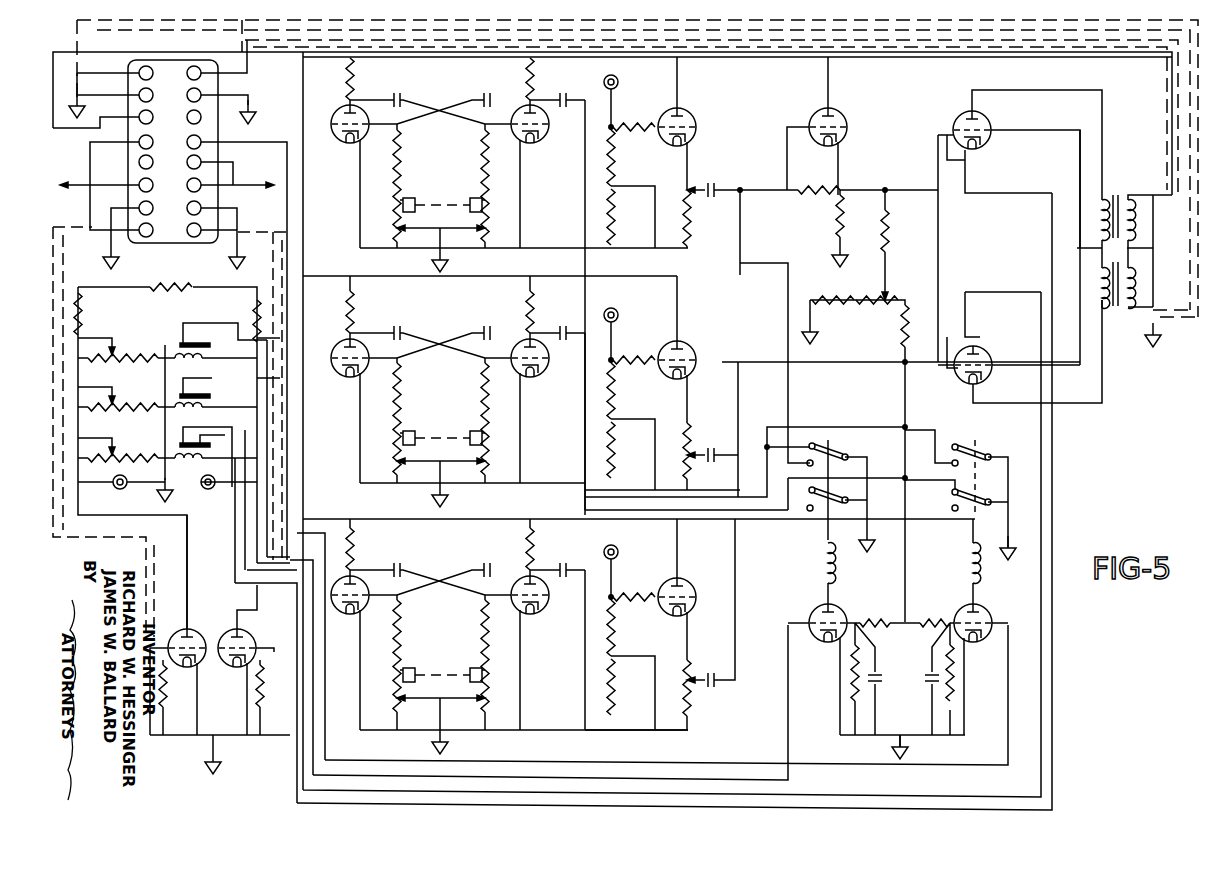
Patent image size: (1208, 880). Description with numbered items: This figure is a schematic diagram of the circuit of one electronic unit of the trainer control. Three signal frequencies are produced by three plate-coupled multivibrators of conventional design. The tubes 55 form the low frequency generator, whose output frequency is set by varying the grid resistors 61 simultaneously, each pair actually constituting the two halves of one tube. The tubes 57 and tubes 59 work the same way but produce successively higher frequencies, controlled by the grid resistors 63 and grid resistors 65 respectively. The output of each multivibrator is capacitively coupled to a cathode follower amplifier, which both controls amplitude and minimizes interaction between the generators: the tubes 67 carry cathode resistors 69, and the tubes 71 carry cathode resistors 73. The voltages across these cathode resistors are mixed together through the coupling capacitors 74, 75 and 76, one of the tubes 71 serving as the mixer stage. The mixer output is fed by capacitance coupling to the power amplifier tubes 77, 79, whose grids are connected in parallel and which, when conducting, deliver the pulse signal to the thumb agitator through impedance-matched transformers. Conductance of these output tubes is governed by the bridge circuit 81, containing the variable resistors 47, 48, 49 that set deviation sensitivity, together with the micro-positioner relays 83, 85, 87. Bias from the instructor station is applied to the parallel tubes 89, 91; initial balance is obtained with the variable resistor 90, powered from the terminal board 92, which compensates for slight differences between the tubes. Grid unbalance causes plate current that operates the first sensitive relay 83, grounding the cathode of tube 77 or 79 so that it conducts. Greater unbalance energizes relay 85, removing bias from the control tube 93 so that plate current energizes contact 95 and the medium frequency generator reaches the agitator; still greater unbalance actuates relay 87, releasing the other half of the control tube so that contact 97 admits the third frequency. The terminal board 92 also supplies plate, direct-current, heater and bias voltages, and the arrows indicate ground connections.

The variable resistor 47 is at (122, 449).
The variable resistor 48 is at (122, 397).
The variable resistor 49 is at (122, 348).
The multivibrator tube 55 is at (336, 112).
The multivibrator tube 57 is at (337, 326).
The multivibrator tube 59 is at (344, 588).
The grid resistor 61 is at (394, 196).
The grid resistor 63 is at (387, 420).
The grid resistor 65 is at (387, 662).
The cathode follower amplifier tube 67 is at (692, 124).
The cathode resistor 69 is at (687, 230).
The cathode follower amplifier tube 71 is at (673, 607).
The cathode resistor 73 is at (705, 695).
The coupling capacitor 74 is at (715, 181).
The coupling capacitor 75 is at (712, 471).
The coupling capacitor 76 is at (711, 603).
The power amplifier tube 77 is at (958, 122).
The power amplifier tube 79 is at (987, 350).
The bridge circuit 81 is at (177, 441).
The first sensitive relay 83 is at (202, 440).
The relay 85 is at (208, 392).
The relay 87 is at (192, 330).
The bridge tube 89 is at (180, 632).
The variable resistor 90 is at (174, 284).
The bridge tube 91 is at (230, 632).
The terminal board 92 is at (178, 163).
The control tube 93 is at (835, 607).
The contact 95 is at (833, 453).
The contact 97 is at (985, 448).